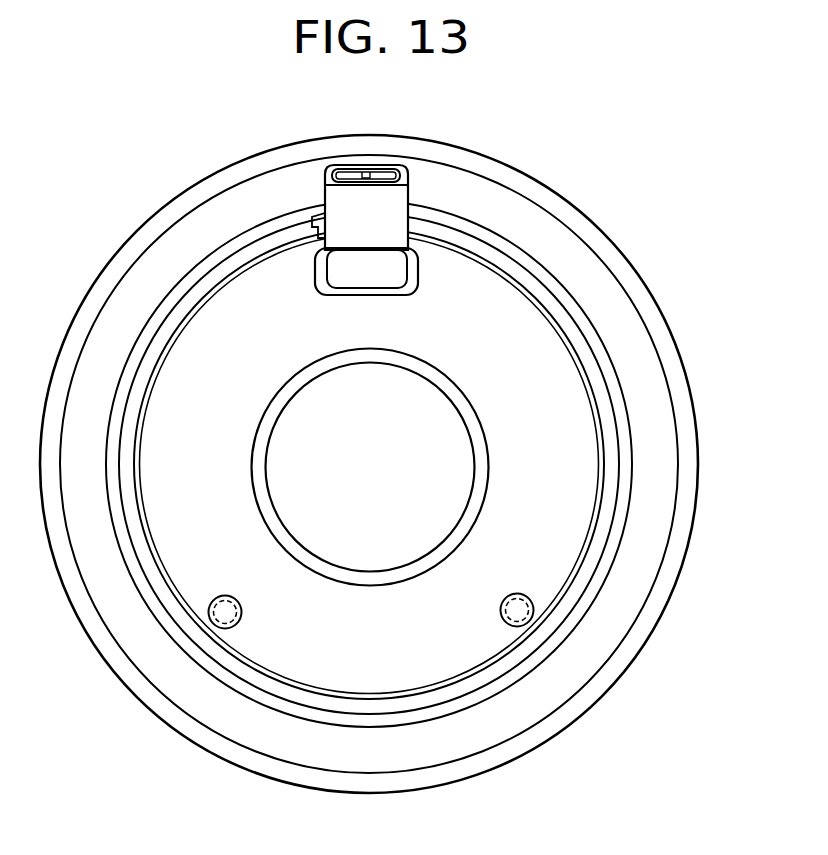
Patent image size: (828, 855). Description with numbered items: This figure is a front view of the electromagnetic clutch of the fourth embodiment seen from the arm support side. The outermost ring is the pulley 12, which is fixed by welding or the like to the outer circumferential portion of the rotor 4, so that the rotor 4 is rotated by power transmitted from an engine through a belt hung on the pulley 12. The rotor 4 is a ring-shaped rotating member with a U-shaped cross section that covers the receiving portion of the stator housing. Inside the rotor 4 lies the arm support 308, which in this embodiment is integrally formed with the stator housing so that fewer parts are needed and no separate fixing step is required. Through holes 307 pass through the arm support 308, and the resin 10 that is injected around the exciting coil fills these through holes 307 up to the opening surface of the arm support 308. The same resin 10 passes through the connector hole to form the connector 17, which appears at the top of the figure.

The pulley 12 is at (565, 200).
The rotor 4 is at (600, 383).
The arm support 308 is at (565, 332).
The through holes 307 is at (533, 628).
The resin 10 is at (523, 610).
The connector 17 is at (390, 205).